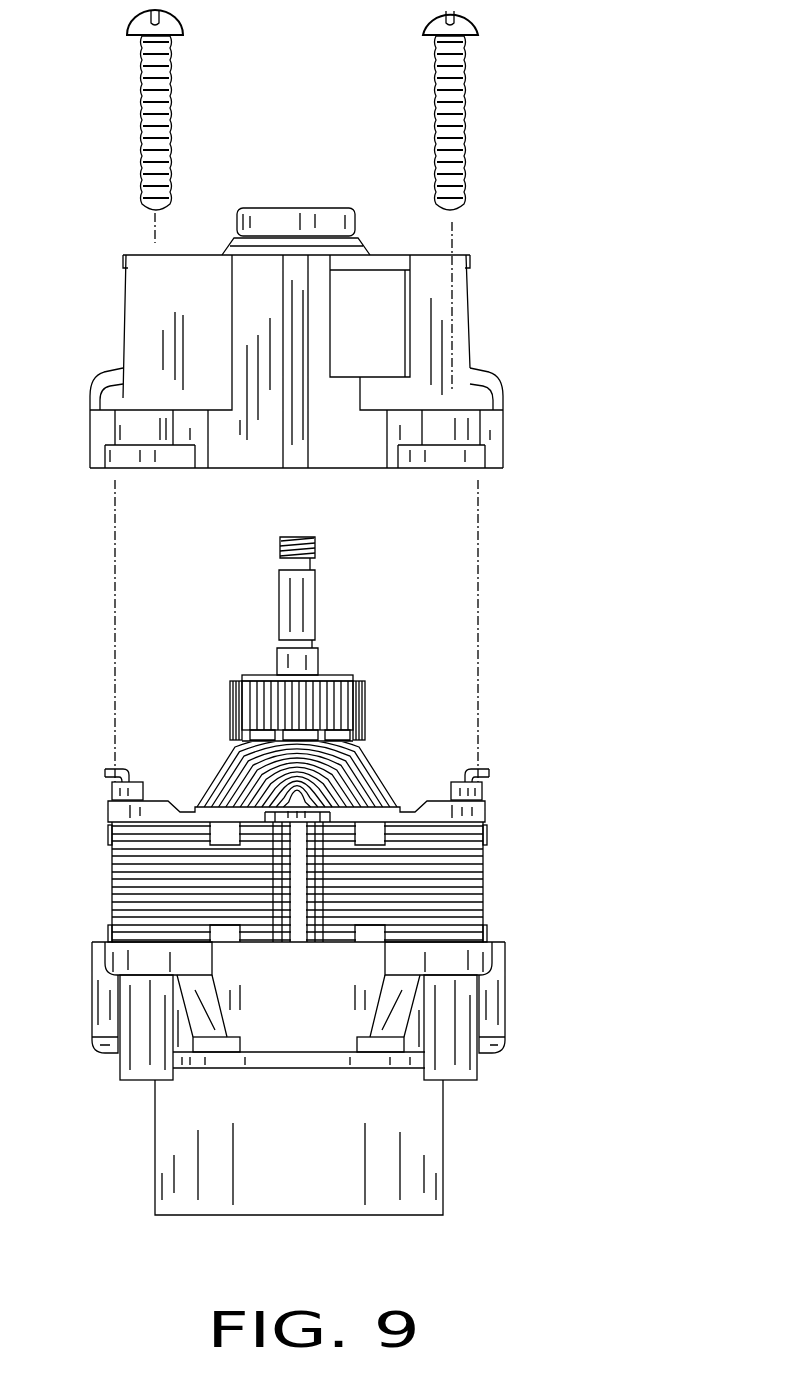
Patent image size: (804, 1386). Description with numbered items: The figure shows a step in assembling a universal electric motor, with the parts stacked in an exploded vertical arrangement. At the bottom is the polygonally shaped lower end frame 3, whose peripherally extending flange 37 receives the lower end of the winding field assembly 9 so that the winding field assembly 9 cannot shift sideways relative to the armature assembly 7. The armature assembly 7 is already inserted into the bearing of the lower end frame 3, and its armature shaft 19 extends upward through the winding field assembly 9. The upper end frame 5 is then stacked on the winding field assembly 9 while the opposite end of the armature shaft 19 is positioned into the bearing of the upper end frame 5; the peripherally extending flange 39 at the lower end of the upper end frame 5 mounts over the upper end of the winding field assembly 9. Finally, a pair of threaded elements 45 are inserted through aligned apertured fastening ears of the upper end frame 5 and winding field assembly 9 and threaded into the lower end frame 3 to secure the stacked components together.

The threaded elements 45 is at (142, 134).
The upper end frame 5 is at (296, 338).
The peripherally extending flange 39 is at (497, 455).
The armature shaft 19 is at (339, 606).
The armature assembly 7 is at (321, 662).
The winding field assembly 9 is at (485, 893).
The peripherally extending flange 37 is at (497, 950).
The lower end frame 3 is at (155, 1133).